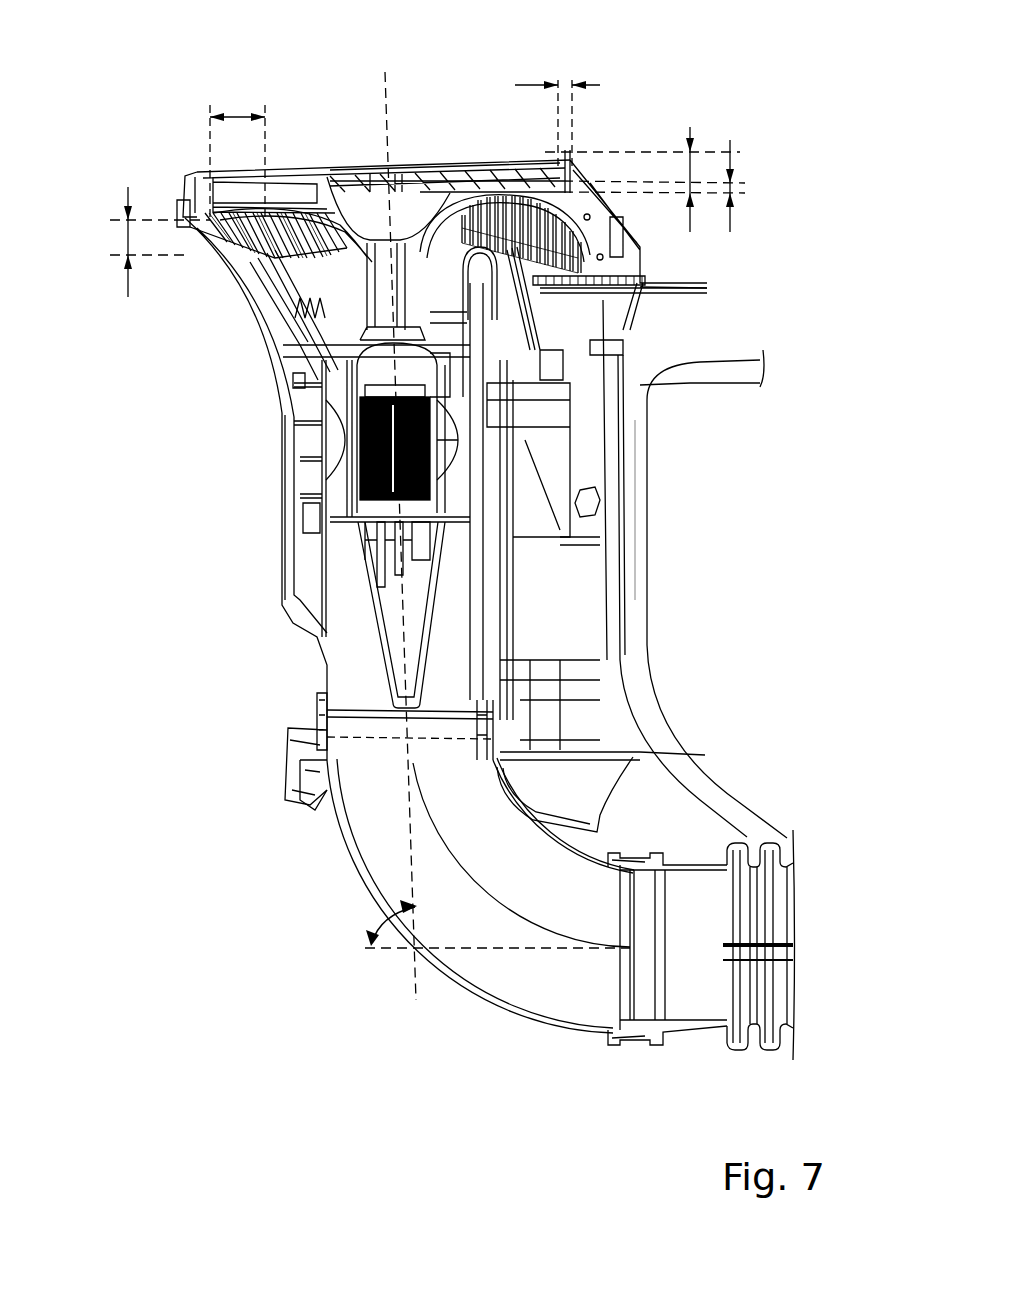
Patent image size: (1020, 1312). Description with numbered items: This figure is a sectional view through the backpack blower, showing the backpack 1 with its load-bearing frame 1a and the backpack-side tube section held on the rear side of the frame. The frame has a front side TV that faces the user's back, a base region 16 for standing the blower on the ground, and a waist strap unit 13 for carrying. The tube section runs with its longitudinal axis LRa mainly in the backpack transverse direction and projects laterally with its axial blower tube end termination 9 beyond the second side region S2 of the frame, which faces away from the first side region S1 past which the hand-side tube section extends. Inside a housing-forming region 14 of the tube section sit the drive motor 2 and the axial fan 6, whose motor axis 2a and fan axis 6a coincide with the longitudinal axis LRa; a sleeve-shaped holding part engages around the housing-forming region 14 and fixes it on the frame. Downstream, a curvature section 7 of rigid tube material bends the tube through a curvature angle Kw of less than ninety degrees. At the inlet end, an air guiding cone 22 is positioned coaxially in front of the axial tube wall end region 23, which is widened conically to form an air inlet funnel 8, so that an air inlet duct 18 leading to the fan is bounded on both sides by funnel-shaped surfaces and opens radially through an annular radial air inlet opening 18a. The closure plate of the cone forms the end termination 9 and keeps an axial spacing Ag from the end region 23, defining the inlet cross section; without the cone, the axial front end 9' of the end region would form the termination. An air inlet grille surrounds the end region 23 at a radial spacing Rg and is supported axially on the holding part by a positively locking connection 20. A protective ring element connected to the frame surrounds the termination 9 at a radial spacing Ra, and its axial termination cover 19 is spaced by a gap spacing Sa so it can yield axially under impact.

The backpack 1 is at (668, 657).
The load-bearing frame 1a is at (603, 593).
The drive motor 2 is at (362, 471).
The motor axis 2a is at (390, 548).
The axial fan 6 is at (355, 372).
The axial fan axis 6a is at (407, 621).
The curvature section 7 is at (362, 868).
The air inlet funnel 8 is at (323, 312).
The axial blower tube end termination 9 is at (521, 185).
The axial front end 9' is at (587, 311).
The waist strap unit 13 is at (658, 731).
The housing-forming region 14 is at (350, 422).
The base region 16 is at (323, 801).
The air inlet duct 18 is at (317, 274).
The annular radial air inlet opening 18a is at (218, 244).
The axial termination cover 19 is at (480, 163).
The positively locking connection 20 is at (293, 381).
The air guiding cone 22 is at (322, 218).
The axial tube wall end region 23 is at (280, 263).
The axial spacing Ag is at (127, 243).
The radial spacing Rg is at (262, 115).
The radial spacing Ra is at (565, 85).
The gap spacing Sa is at (734, 188).
The first side region S1 is at (592, 756).
The second side region S2 is at (615, 333).
The front side TV is at (600, 568).
The longitudinal axis LRa is at (407, 678).
The curvature angle Kw is at (381, 923).